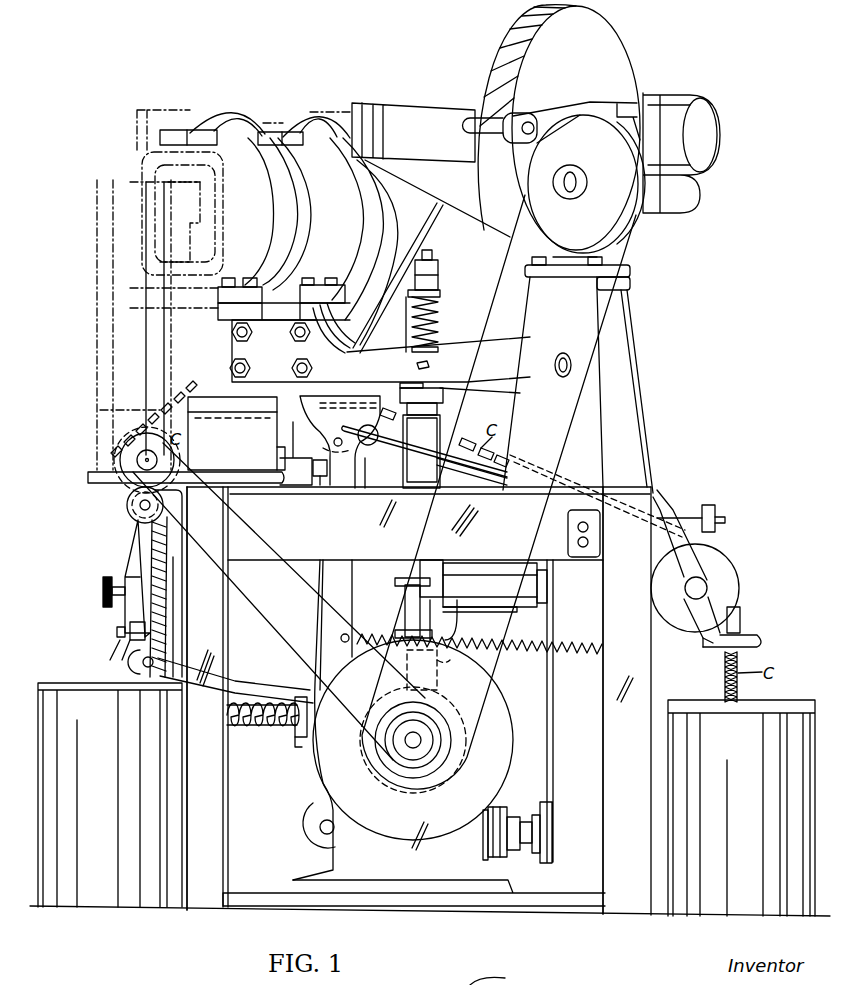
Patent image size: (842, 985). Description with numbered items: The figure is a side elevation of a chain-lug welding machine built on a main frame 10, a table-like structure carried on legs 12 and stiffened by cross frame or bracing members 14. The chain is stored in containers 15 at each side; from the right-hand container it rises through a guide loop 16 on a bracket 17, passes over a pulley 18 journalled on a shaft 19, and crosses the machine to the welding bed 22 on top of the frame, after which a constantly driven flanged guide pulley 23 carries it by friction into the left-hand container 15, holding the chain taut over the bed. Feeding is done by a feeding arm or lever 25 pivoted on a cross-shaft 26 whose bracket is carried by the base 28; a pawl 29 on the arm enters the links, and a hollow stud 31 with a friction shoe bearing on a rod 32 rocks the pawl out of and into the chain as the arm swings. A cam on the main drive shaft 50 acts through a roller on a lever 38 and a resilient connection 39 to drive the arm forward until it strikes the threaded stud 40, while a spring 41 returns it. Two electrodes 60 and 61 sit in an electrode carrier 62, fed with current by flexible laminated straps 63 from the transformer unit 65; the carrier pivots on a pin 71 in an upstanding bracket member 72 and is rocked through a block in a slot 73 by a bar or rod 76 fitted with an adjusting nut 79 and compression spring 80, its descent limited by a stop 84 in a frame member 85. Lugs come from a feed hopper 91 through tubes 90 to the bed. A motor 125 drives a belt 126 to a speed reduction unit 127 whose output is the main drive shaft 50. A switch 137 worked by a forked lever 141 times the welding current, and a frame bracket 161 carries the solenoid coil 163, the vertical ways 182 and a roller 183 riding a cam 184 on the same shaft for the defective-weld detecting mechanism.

The main frame 10 is at (655, 498).
The legs 12 is at (612, 706).
The cross frame or bracing members 14 is at (419, 523).
The containers 15 is at (426, 799).
The guide loop 16 is at (760, 642).
The bracket 17 is at (690, 570).
The pulley 18 is at (707, 552).
The shaft 19 is at (712, 588).
The welding bed 22 is at (236, 433).
The flanged guide pulley 23 is at (120, 460).
The feeding arm or lever 25 is at (303, 800).
The cross-shaft 26 is at (320, 827).
The base 28 is at (247, 898).
The pawl 29 is at (330, 442).
The hollow stud 31 is at (370, 443).
The rod 32 is at (465, 464).
The lever 38 is at (304, 738).
The resilient connection 39 is at (272, 728).
The threaded stud 40 is at (320, 485).
The spring 41 is at (592, 648).
The main drive shaft 50 is at (426, 752).
The electrode 60 is at (265, 312).
The electrode 61 is at (332, 315).
The electrode carrier 62 is at (380, 351).
The flexible laminated straps 63 is at (362, 228).
The transformer unit 65 is at (167, 177).
The pin 71 is at (568, 355).
The upstanding bracket member 72 is at (628, 368).
The slot 73 is at (427, 363).
The bar or rod 76 is at (412, 320).
The adjusting nut 79 is at (440, 282).
The compression spring 80 is at (438, 313).
The stop 84 is at (453, 400).
The frame member 85 is at (421, 445).
The tubes 90 is at (430, 233).
The feed hopper 91 is at (432, 113).
The motor 125 is at (483, 586).
The belt 126 is at (554, 758).
The speed reduction unit 127 is at (497, 778).
The switch 137 is at (136, 560).
The forked lever 141 is at (283, 690).
The frame bracket 161 is at (468, 626).
The solenoid coil 163 is at (410, 612).
The vertical ways 182 is at (440, 675).
The roller 183 is at (440, 688).
The cam 184 is at (373, 738).